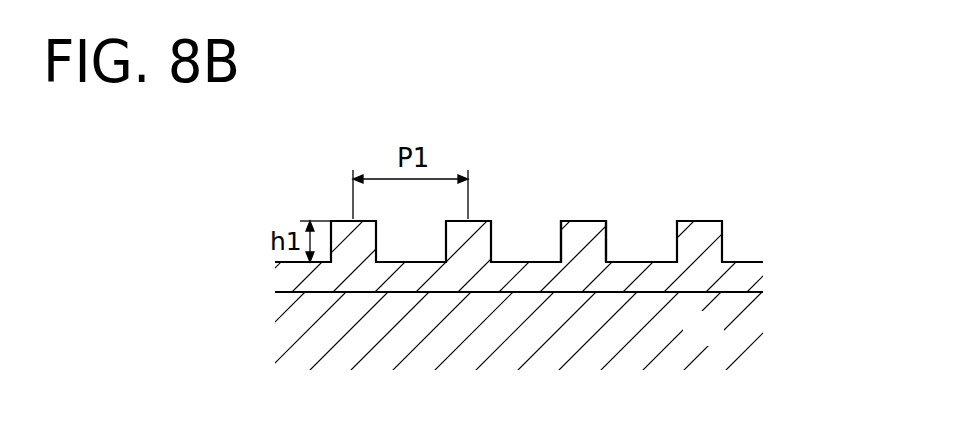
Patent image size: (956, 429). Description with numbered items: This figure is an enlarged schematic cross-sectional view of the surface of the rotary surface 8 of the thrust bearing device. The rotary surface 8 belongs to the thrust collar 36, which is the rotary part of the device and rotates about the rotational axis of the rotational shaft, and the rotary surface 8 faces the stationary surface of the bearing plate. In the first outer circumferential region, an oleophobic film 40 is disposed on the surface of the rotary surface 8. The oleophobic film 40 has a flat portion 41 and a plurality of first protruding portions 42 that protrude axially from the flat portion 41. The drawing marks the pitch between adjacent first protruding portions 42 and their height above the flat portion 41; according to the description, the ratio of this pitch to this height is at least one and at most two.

The rotary surface 8 is at (528, 243).
The oleophobic film 40 is at (740, 262).
The first protruding portions 42 is at (588, 221).
The flat portion 41 is at (637, 262).
The thrust collar 36 is at (718, 341).